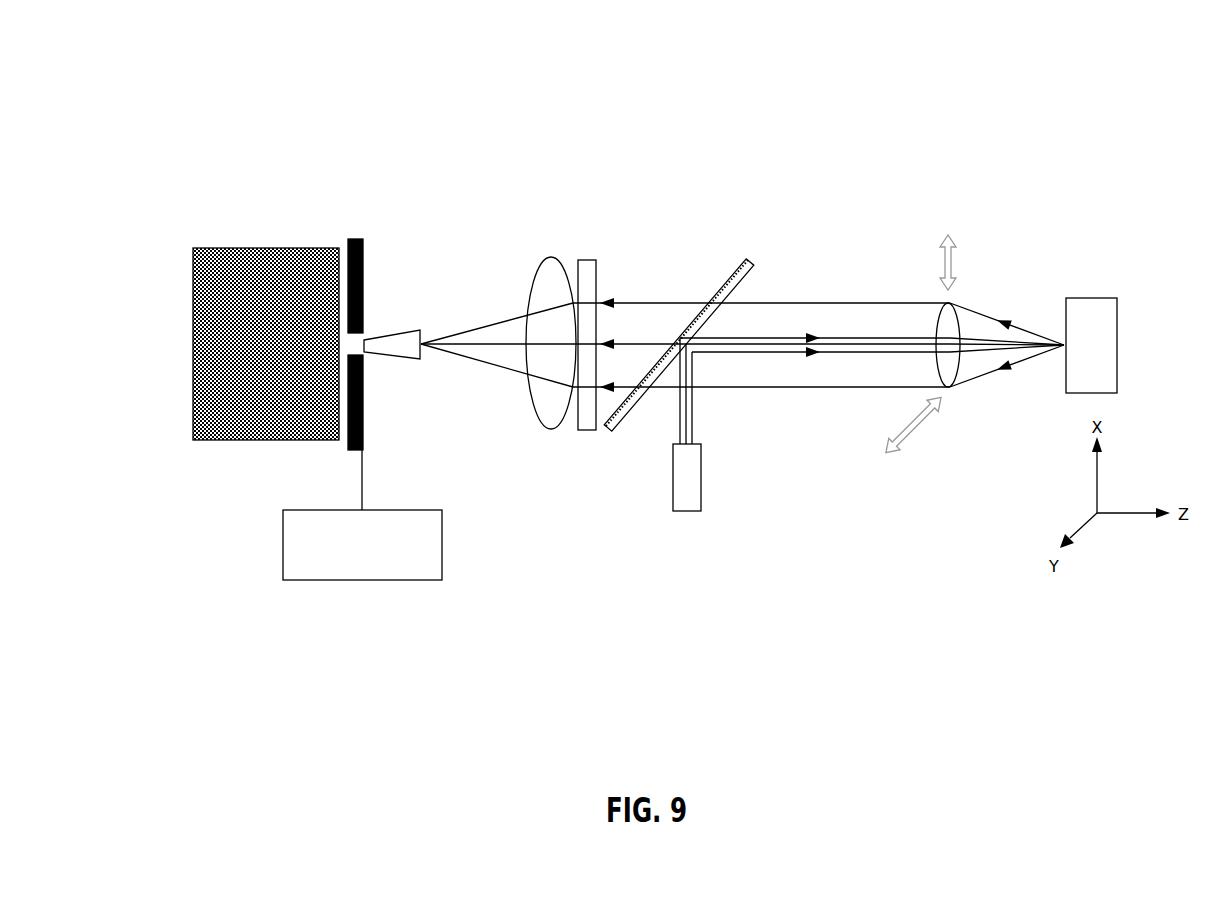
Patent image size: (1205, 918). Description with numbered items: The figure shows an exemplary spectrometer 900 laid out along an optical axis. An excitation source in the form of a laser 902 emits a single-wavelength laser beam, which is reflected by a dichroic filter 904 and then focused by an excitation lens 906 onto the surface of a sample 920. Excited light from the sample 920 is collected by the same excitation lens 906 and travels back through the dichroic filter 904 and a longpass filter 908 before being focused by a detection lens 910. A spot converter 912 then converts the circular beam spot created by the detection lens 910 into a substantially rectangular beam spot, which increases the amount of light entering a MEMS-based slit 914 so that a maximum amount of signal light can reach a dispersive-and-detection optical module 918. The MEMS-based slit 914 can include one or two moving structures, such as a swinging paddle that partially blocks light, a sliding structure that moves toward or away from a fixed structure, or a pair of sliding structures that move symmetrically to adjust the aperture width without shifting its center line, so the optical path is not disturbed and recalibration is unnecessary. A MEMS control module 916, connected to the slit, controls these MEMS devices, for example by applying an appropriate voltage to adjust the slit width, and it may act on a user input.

The spectrometer 900 is at (88, 96).
The laser 902 is at (685, 511).
The dichroic filter 904 is at (752, 262).
The excitation lens 906 is at (949, 388).
The longpass filter 908 is at (597, 278).
The detection lens 910 is at (551, 429).
The spot converter 912 is at (397, 330).
The MEMS-based slit 914 is at (364, 267).
The MEMS control module 916 is at (347, 580).
The dispersive-and-detection optical module 918 is at (257, 248).
The sample 920 is at (1092, 298).